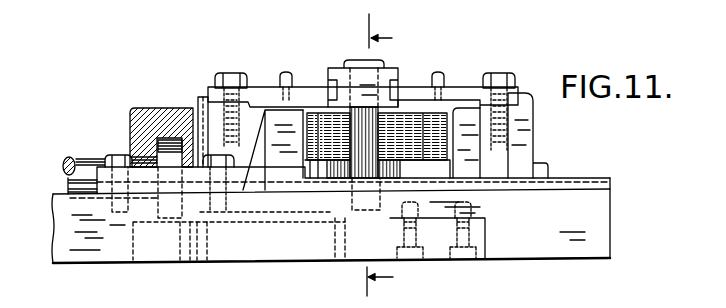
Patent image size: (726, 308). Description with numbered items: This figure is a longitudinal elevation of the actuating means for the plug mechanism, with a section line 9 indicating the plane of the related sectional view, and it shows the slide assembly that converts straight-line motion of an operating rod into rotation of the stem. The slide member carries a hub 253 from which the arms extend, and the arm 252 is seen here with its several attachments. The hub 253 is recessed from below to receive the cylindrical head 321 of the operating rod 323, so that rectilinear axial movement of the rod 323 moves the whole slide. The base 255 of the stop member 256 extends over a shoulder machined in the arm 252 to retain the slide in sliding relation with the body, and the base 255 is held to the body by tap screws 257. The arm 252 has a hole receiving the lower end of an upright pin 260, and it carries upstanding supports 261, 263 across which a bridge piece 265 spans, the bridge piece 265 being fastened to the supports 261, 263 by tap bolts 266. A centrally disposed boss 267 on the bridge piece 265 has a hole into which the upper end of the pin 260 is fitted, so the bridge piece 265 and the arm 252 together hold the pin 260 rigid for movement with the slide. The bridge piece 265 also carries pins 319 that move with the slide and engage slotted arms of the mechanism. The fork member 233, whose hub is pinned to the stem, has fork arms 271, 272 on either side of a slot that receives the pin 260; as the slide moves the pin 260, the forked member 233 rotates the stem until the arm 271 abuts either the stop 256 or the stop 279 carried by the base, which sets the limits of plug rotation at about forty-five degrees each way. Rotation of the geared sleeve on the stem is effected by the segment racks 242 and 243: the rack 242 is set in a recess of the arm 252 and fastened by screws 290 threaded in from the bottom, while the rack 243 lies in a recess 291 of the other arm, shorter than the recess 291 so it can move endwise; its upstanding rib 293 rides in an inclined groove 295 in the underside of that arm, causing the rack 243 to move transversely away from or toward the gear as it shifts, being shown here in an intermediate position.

The section line 9- 9 is at (380, 158).
The fork member 233 is at (402, 118).
The rack element 242 is at (440, 258).
The rack element 243 is at (205, 247).
The arm 252 is at (553, 258).
The hub 253 is at (130, 121).
The base 255 is at (247, 185).
The stop member 256 is at (294, 110).
The tap screws 257 is at (117, 155).
The upright pin 260 is at (360, 178).
The upstanding support 261 is at (534, 130).
The upstanding support 263 is at (201, 97).
The bridge piece 265 is at (265, 87).
The tap bolts 266 is at (233, 73).
The boss 267 is at (343, 70).
The fork arm 271 is at (414, 169).
The fork arm 272 is at (313, 170).
The stop 279 is at (465, 120).
The screws 290 is at (457, 232).
The recess 291 is at (185, 258).
The upstanding rib 293 is at (273, 213).
The inclined groove 295 is at (333, 220).
The pins 319 is at (286, 72).
The cylindrical head 321 is at (168, 140).
The operating rod 323 is at (67, 158).